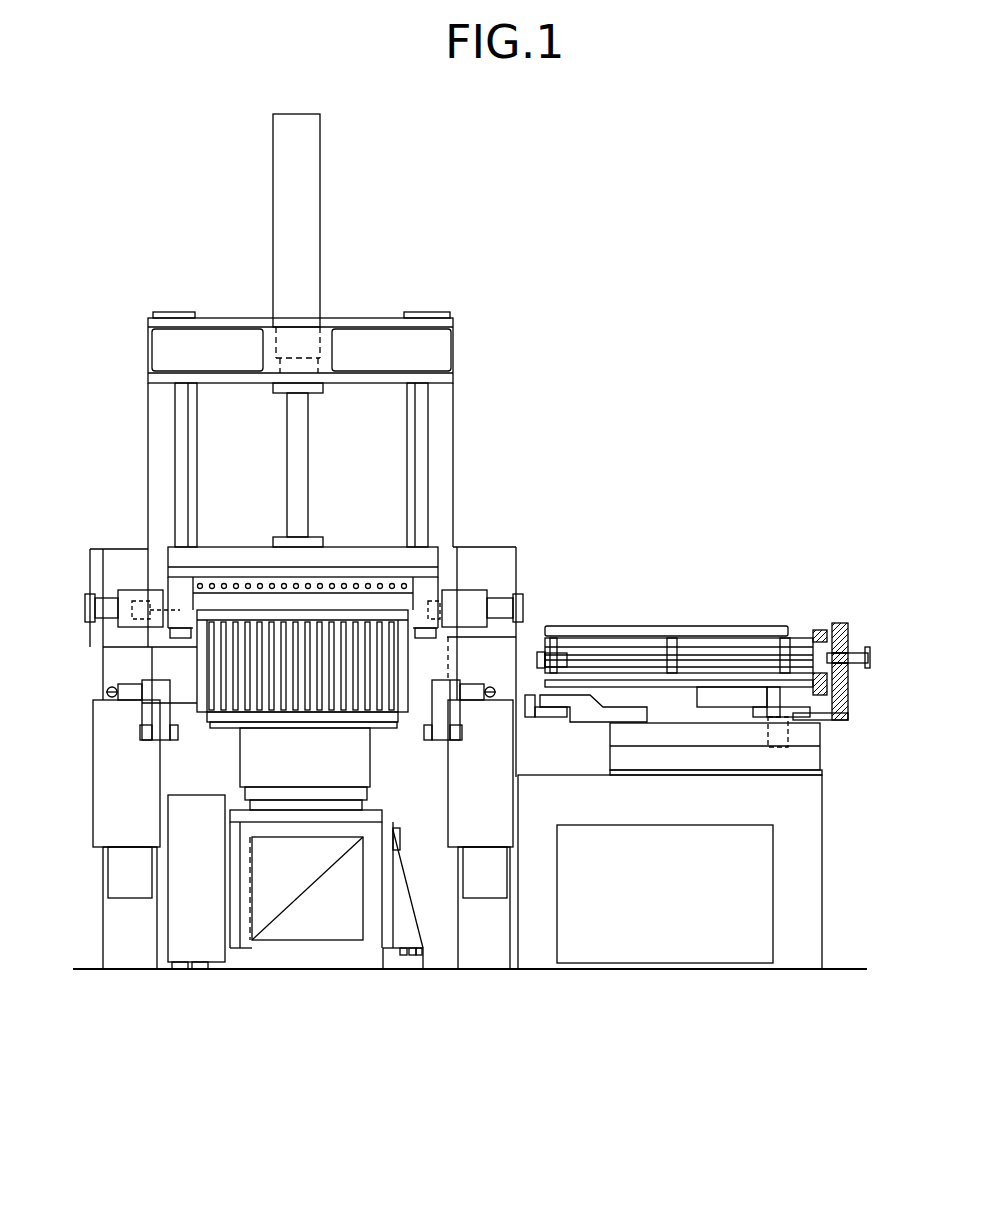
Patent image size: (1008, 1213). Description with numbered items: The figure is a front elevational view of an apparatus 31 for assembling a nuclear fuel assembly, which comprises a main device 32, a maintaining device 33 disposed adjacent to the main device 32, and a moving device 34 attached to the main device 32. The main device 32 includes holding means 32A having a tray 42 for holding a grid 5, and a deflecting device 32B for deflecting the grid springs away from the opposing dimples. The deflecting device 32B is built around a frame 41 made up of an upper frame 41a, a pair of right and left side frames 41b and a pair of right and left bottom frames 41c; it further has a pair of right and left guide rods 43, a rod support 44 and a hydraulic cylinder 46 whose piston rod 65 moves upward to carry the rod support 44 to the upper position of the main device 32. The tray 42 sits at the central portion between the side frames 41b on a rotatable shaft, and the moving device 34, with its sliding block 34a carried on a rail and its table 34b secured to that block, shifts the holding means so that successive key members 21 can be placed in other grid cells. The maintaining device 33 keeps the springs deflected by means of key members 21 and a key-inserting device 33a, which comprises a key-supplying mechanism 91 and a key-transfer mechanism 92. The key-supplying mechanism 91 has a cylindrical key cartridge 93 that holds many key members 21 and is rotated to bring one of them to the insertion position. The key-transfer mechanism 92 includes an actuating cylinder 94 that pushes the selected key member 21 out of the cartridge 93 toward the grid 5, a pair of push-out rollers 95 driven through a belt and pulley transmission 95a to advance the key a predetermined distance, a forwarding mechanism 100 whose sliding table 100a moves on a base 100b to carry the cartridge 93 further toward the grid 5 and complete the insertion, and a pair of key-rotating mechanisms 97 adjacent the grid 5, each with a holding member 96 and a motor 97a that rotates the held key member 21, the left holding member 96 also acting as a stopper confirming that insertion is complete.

The apparatus for assembling a nuclear fuel assembly 31 is at (550, 282).
The main device 32 is at (467, 402).
The holding means 32A is at (278, 725).
The deflecting device 32B is at (352, 220).
The maintaining device 33 is at (681, 615).
The key-inserting device 33a is at (742, 628).
The moving device 34 is at (306, 931).
The sliding block 34a is at (180, 970).
The table 34b is at (325, 930).
The frame 41 is at (249, 579).
The upper frame 41a is at (173, 347).
The side frames 41b is at (167, 440).
The bottom frames 41c is at (103, 773).
The tray 42 is at (370, 787).
The guide rods 43 is at (193, 452).
The rod support 44 is at (372, 560).
The hydraulic cylinder 46 is at (303, 248).
The grid 5 is at (382, 727).
The piston rod 65 is at (303, 477).
The key-supplying mechanism 91 is at (857, 640).
The key-transfer mechanism 92 is at (817, 722).
The key cartridge 93 is at (627, 650).
The actuating cylinder 94 is at (730, 697).
The push-out rollers 95 is at (586, 821).
The belt and pulley transmission 95a is at (557, 715).
The holding member 96 is at (170, 697).
The key-rotating mechanisms 97 is at (170, 797).
The motor 97a is at (460, 737).
The forwarding mechanism 100 is at (670, 846).
The sliding table 100a is at (612, 745).
The base 100b is at (727, 770).
The key members 21 is at (697, 637).